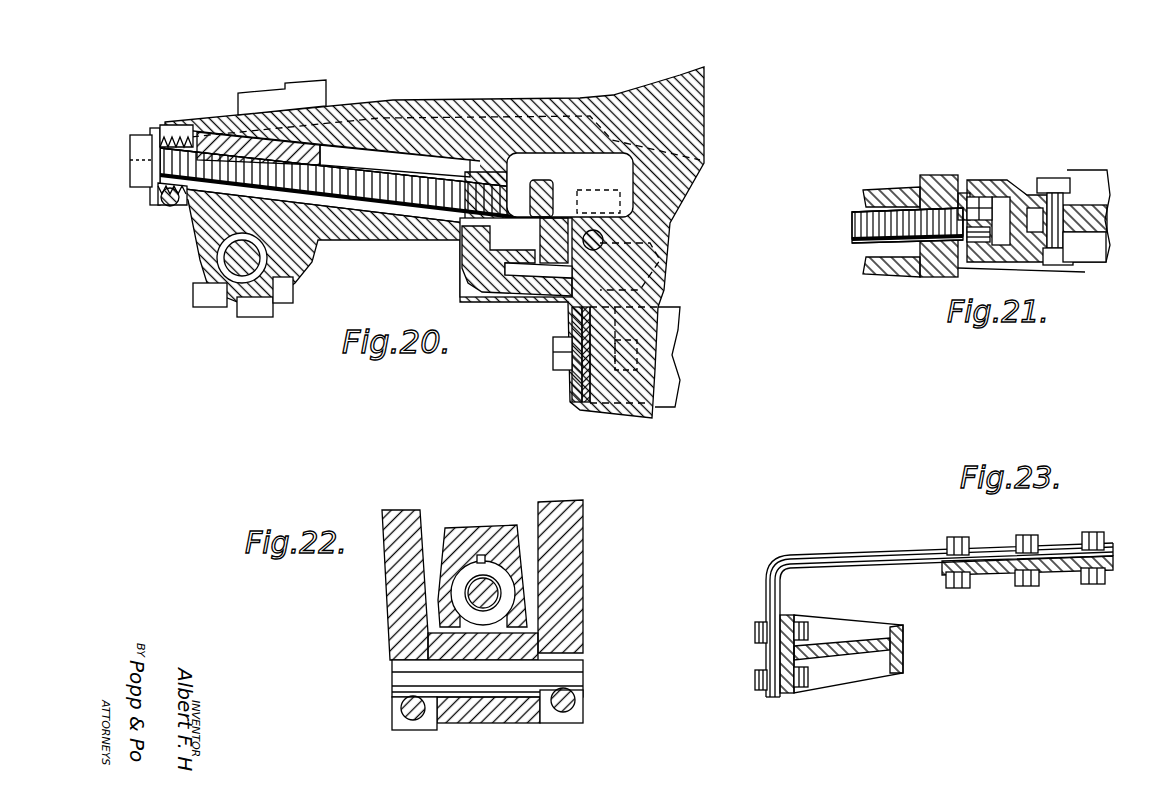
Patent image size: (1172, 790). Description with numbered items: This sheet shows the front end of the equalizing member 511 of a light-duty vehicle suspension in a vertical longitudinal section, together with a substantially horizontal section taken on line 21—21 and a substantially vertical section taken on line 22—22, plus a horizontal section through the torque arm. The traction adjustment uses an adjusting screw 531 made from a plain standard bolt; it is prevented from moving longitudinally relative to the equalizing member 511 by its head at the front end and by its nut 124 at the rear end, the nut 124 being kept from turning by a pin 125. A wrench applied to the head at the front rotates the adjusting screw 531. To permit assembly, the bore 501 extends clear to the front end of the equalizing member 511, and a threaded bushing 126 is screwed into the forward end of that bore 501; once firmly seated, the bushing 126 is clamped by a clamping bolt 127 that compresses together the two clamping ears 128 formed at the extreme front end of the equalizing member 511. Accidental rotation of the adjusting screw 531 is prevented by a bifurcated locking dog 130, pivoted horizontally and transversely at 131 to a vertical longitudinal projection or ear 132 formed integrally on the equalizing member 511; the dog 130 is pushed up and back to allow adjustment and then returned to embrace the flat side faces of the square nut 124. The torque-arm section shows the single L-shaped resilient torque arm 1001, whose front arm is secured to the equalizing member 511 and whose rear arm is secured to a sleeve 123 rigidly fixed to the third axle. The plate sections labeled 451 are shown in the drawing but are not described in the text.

In FIG. 20, the equalizing member 511 is at (652, 428).
In FIG. 21, the equalizing member 511 is at (888, 189).
In FIG. 22, the equalizing member 511 is at (478, 526).
In FIG. 23, the equalizing member 511 is at (838, 680).
In FIG. 20, the guide plate 451 is at (240, 97).
In FIG. 22, the guide plate 451 is at (383, 583).
In FIG. 20, the bore 501 is at (388, 210).
In FIG. 20, the adjusting screw 531 is at (130, 155).
In FIG. 21, the adjusting screw 531 is at (862, 243).
In FIG. 22, the adjusting screw 531 is at (500, 592).
In FIG. 20, the threaded bushing 126 is at (164, 124).
In FIG. 20, the clamping bolt 127 is at (170, 207).
In FIG. 20, the clamping ears 128 is at (160, 200).
In FIG. 20, the nut 124 is at (505, 185).
In FIG. 21, the nut 124 is at (966, 193).
In FIG. 20, the pin 125 is at (548, 200).
In FIG. 21, the pin 125 is at (980, 197).
In FIG. 20, the bifurcated locking dog 130 is at (508, 278).
In FIG. 21, the bifurcated locking dog 130 is at (1015, 182).
In FIG. 20, the pivot 131 is at (603, 240).
In FIG. 21, the pivot 131 is at (1052, 178).
In FIG. 20, the projection or ear 132 is at (553, 280).
In FIG. 21, the projection or ear 132 is at (1085, 255).
In FIG. 20, the section line 21— 21 is at (700, 232).
In FIG. 20, the section line 22— 22 is at (250, 73).
In FIG. 23, the L shaped resilient torque arm 1001 is at (834, 570).
In FIG. 23, the sleeve 123 is at (1005, 575).